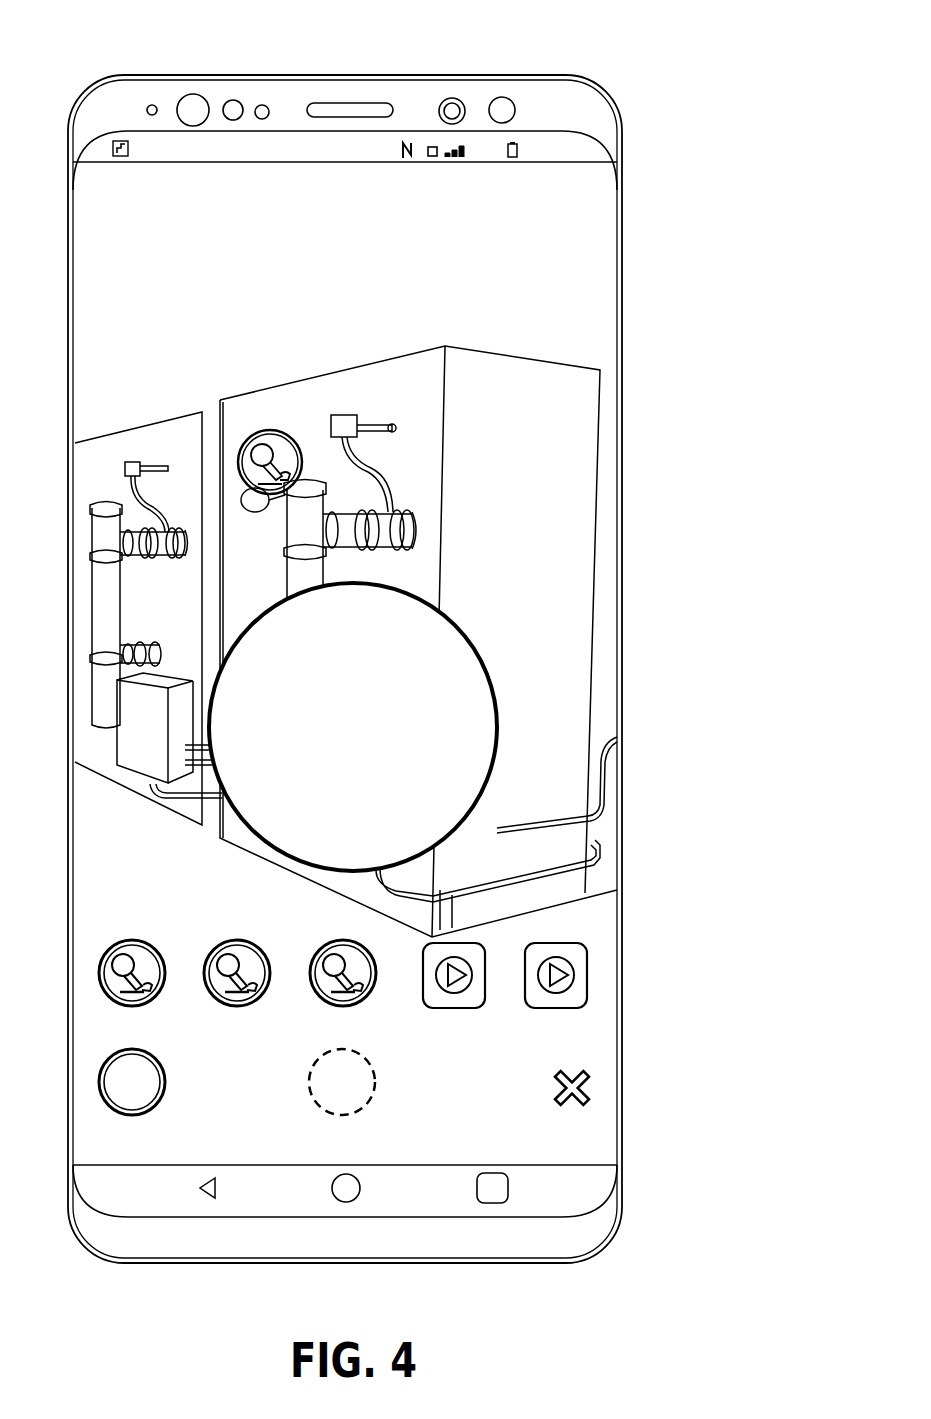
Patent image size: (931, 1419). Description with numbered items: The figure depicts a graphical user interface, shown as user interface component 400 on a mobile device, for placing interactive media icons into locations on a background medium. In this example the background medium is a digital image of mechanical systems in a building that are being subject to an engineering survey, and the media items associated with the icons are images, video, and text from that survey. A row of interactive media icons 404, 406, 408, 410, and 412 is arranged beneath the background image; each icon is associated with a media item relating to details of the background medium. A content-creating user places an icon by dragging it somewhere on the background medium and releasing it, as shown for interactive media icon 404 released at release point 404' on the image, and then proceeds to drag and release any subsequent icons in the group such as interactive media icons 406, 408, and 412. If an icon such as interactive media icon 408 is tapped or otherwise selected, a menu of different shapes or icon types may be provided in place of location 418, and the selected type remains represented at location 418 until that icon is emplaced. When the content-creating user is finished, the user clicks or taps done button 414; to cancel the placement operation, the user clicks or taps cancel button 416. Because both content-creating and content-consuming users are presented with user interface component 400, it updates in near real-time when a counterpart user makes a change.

The user interface component 400 is at (652, 52).
The release point 404' is at (270, 412).
The interactive media icon 404 is at (132, 941).
The interactive media icon 406 is at (239, 940).
The interactive media icon 408 is at (347, 940).
The interactive media icon 410 is at (456, 943).
The interactive media icon 412 is at (588, 970).
The done button 414 is at (165, 1070).
The cancel button 416 is at (586, 1090).
The location 418 is at (376, 1070).